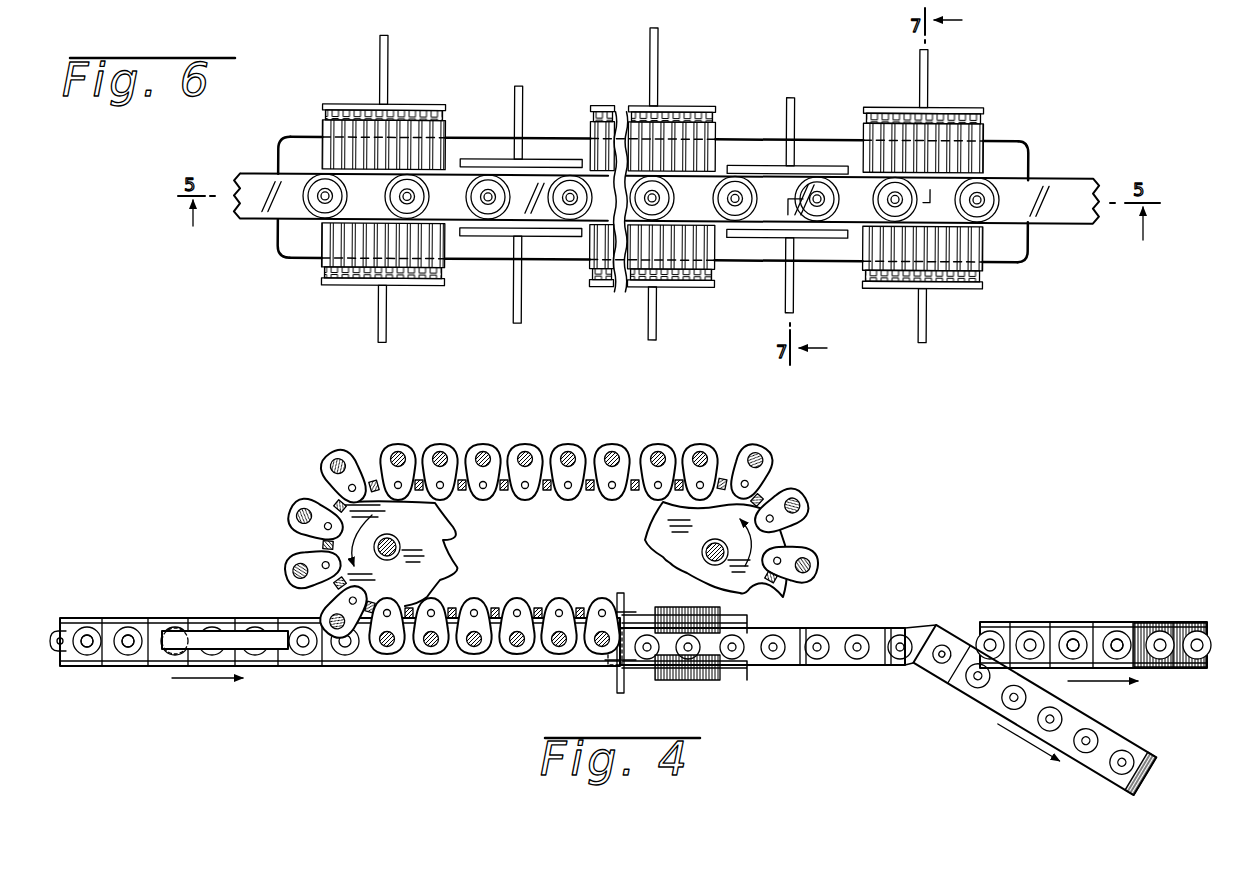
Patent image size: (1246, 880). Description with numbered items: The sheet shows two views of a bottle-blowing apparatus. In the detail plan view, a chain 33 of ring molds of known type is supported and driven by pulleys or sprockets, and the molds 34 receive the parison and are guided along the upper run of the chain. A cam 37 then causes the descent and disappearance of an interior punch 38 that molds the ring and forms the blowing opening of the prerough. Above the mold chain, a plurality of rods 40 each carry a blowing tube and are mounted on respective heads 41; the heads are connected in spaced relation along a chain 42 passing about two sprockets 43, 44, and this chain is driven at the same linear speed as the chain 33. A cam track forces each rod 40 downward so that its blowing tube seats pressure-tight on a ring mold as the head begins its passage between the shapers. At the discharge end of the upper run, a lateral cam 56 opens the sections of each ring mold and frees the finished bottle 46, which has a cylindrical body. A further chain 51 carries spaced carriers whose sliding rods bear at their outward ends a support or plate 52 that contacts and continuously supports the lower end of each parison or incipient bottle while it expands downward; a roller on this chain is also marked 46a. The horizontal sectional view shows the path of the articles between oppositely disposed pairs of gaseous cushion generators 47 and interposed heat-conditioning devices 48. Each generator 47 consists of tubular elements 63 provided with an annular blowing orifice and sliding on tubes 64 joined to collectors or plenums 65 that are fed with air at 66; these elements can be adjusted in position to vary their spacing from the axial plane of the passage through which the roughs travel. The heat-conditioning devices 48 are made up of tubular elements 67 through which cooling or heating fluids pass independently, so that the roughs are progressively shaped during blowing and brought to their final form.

In FIG. 4, the chain 33 is at (278, 667).
In FIG. 4, the molds 34 is at (130, 659).
In FIG. 4, the cam 37 is at (210, 636).
In FIG. 4, the interior punch 38 is at (128, 629).
In FIG. 4, the rods 40 is at (485, 462).
In FIG. 4, the head 41 is at (415, 634).
In FIG. 4, the chain 42 is at (545, 502).
In FIG. 4, the sprocket 43 is at (430, 560).
In FIG. 4, the sprocket 44 is at (800, 530).
In FIG. 6, the bottle 46 is at (988, 191).
In FIG. 4, the bottle 46 is at (825, 640).
In FIG. 6, the roller 46a is at (323, 201).
In FIG. 6, the gaseous cushion generators 47 is at (340, 263).
In FIG. 4, the gaseous cushion generators 47 is at (785, 500).
In FIG. 6, the heat-conditioning devices 48 is at (488, 235).
In FIG. 4, the heat-conditioning devices 48 is at (630, 658).
In FIG. 6, the chain 51 is at (245, 217).
In FIG. 6, the support or plate 52 is at (321, 184).
In FIG. 4, the lateral cam 56 is at (985, 700).
In FIG. 6, the tubular elements 63 is at (443, 150).
In FIG. 6, the tubes 64 is at (405, 118).
In FIG. 6, the collectors or plenums 65 is at (395, 108).
In FIG. 6, the air feed 66 is at (393, 45).
In FIG. 6, the tubular elements 67 is at (530, 163).